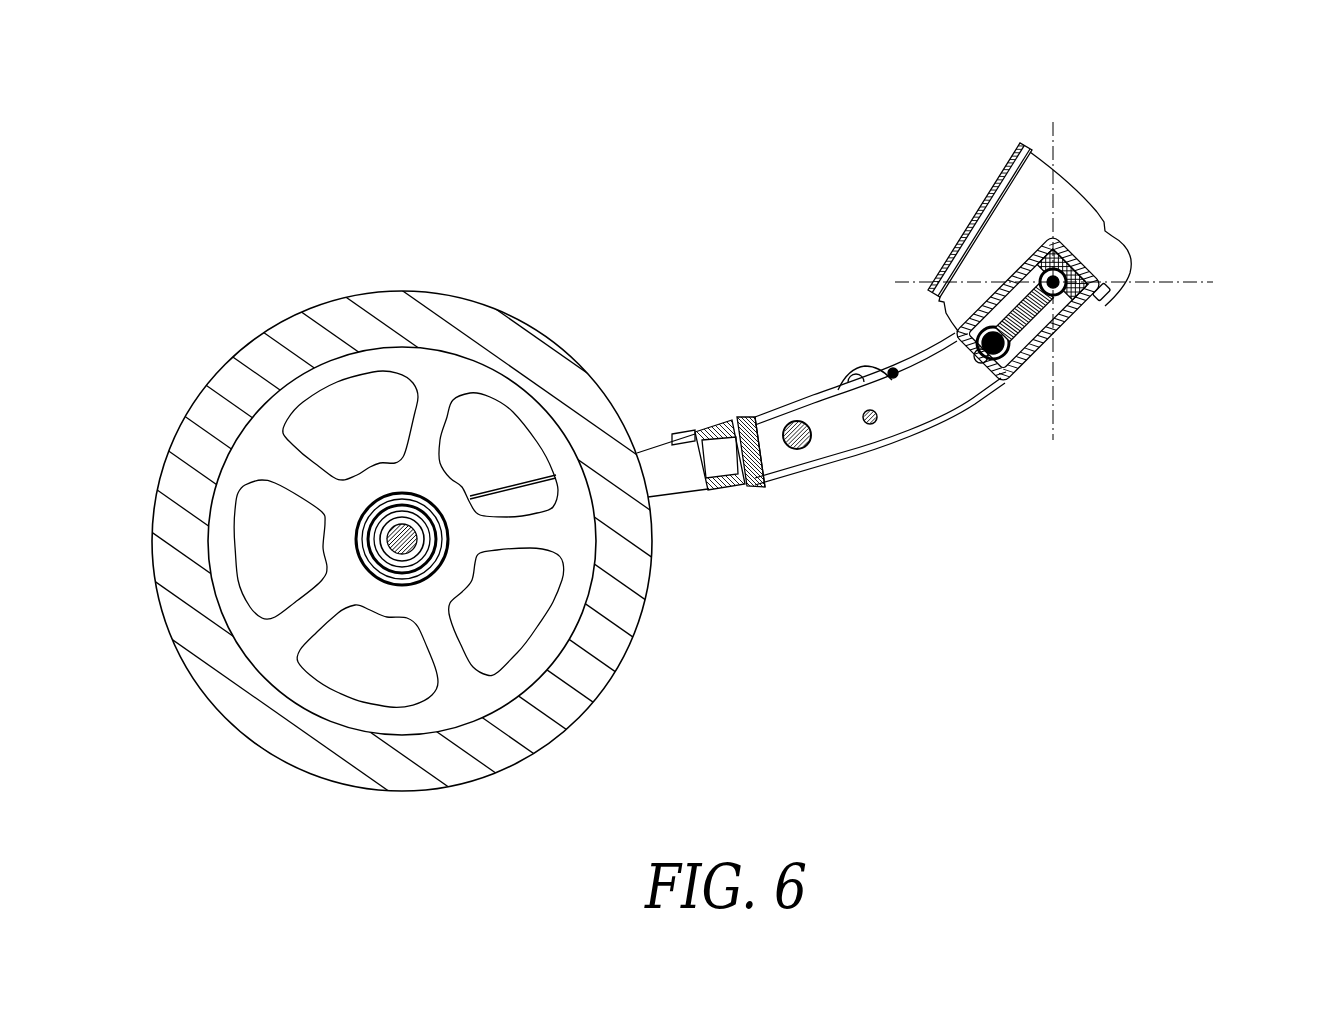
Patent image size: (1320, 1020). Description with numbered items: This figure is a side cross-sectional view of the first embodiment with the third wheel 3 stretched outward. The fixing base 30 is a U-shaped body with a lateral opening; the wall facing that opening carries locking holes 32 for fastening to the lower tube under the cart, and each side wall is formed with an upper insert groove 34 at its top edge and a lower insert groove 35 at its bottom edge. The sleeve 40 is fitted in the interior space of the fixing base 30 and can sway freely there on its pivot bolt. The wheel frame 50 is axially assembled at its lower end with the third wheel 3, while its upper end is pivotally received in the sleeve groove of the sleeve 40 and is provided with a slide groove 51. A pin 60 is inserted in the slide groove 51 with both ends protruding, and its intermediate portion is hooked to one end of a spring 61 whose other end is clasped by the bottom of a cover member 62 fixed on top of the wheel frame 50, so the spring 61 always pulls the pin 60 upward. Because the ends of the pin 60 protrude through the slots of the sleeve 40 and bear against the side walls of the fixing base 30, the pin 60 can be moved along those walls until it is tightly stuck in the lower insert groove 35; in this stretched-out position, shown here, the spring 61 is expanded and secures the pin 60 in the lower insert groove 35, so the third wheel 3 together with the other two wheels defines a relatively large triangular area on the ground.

The third wheel 3 is at (527, 725).
The fixing base 30 is at (1040, 195).
The locking holes 32 is at (1012, 162).
The upper insert groove 34 is at (1107, 230).
The lower insert groove 35 is at (978, 340).
The sleeve 40 is at (1080, 298).
The wheel frame 50 is at (937, 427).
The slide groove 51 is at (984, 362).
The pin 60 is at (1013, 377).
The spring 61 is at (1057, 336).
The cover member 62 is at (1080, 262).